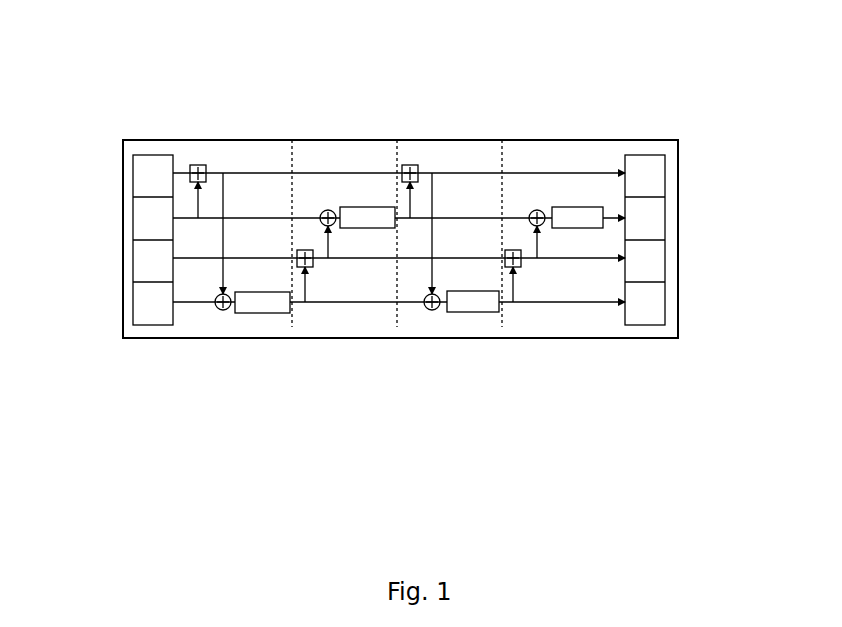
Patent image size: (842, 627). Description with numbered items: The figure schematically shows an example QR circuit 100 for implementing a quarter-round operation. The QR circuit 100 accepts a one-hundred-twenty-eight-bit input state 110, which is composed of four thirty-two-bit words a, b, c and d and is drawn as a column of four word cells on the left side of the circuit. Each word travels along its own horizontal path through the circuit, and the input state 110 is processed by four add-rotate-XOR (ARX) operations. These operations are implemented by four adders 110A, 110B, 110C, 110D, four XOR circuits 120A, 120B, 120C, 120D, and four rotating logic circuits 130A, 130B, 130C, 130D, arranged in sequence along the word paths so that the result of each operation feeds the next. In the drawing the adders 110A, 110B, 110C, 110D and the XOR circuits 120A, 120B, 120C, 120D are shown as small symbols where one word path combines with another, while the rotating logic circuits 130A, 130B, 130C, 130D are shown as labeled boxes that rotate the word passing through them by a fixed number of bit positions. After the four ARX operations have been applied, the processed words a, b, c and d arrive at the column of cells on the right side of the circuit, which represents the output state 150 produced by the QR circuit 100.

The QR circuit 100 is at (635, 140).
The input state 110 is at (133, 247).
The output state 150 is at (665, 263).
The adder 110A is at (192, 163).
The adder 110B is at (313, 264).
The adder 110C is at (409, 165).
The adder 110D is at (522, 264).
The XOR circuit 120A is at (223, 310).
The XOR circuit 120B is at (323, 210).
The XOR circuit 120C is at (433, 310).
The XOR circuit 120D is at (535, 210).
The rotating logic circuit 130A is at (265, 313).
The rotating logic circuit 130B is at (361, 206).
The rotating logic circuit 130C is at (473, 312).
The rotating logic circuit 130D is at (580, 205).